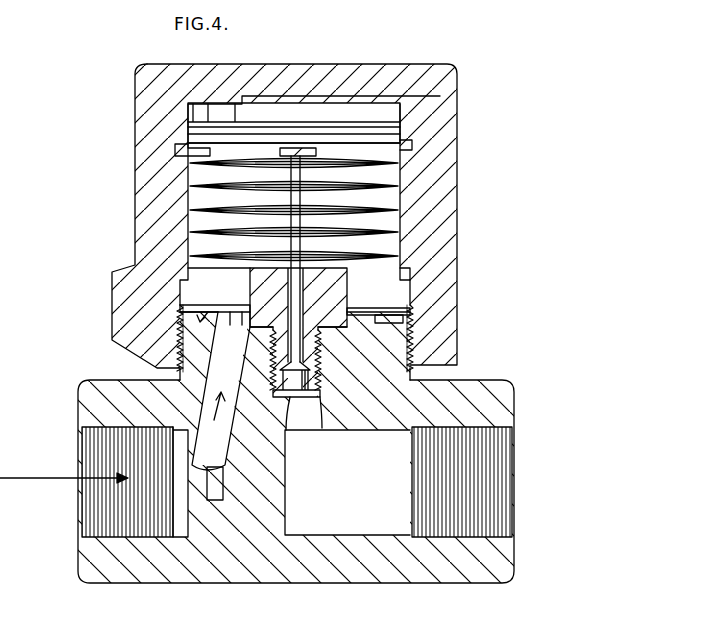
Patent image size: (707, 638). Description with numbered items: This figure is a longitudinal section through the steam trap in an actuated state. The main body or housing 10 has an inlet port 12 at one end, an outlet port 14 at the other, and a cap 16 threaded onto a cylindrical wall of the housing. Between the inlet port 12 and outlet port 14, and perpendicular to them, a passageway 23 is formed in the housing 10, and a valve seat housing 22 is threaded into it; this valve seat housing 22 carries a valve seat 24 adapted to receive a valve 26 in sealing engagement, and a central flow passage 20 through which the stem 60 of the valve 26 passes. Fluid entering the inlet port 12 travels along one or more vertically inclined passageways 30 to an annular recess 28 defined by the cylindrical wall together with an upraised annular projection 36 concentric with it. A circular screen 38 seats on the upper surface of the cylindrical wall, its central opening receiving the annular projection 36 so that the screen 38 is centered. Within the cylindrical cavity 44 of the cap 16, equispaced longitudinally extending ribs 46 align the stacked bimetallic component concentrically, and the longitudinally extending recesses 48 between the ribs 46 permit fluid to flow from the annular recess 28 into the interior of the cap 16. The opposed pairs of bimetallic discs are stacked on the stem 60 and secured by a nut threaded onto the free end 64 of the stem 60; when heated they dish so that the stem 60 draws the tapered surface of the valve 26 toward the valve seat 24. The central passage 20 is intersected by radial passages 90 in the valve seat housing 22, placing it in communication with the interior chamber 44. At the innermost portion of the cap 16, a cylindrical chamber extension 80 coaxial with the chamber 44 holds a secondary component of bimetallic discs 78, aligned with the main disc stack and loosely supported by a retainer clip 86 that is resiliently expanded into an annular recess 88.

The main body or housing 10 is at (500, 583).
The inlet port 12 is at (82, 500).
The outlet port 14 is at (505, 487).
The cap 16 is at (447, 212).
The central flow passage 20 is at (320, 360).
The valve seat housing 22 is at (330, 333).
The passageway 23 is at (292, 383).
The valve seat 24 is at (310, 428).
The valve 26 is at (225, 406).
The annular recess 28 is at (177, 333).
The vertically inclined passageway 30 is at (215, 400).
The upraised annular projection 36 is at (410, 313).
The circular screen 38 is at (180, 290).
The cylindrical cavity 44 is at (402, 196).
The longitudinally extending ribs 46 is at (402, 172).
The longitudinally extending recesses 48 is at (178, 203).
The stem 60 is at (405, 248).
The free end 64 is at (178, 150).
The secondary component of bimetallic discs 78 is at (190, 130).
The cylindrical chamber extension 80 is at (385, 115).
The retainer clip 86 is at (400, 143).
The annular recess 88 is at (412, 150).
The radial passages 90 is at (405, 272).